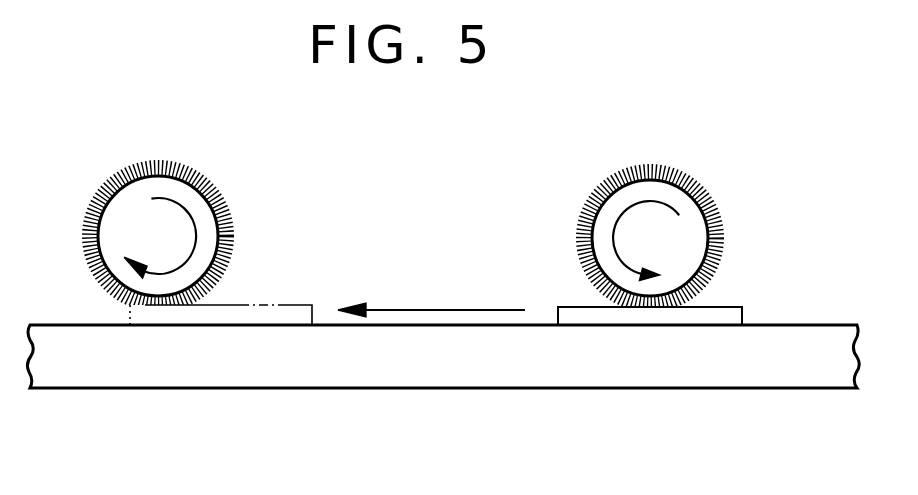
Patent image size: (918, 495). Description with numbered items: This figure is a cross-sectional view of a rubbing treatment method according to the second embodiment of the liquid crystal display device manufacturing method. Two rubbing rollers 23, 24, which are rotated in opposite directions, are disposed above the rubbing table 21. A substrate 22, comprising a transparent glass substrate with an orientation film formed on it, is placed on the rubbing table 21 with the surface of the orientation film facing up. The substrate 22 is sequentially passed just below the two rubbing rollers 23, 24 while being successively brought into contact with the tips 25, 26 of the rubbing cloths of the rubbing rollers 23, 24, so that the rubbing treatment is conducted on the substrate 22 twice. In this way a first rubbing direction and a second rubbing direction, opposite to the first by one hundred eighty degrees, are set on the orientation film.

The rubbing table 21 is at (327, 372).
The substrate 22 is at (283, 307).
The rubbing roller 23 is at (690, 196).
The rubbing roller 24 is at (197, 199).
The tips of the rubbing cloth 25 is at (590, 189).
The tips of the rubbing cloth 26 is at (92, 190).